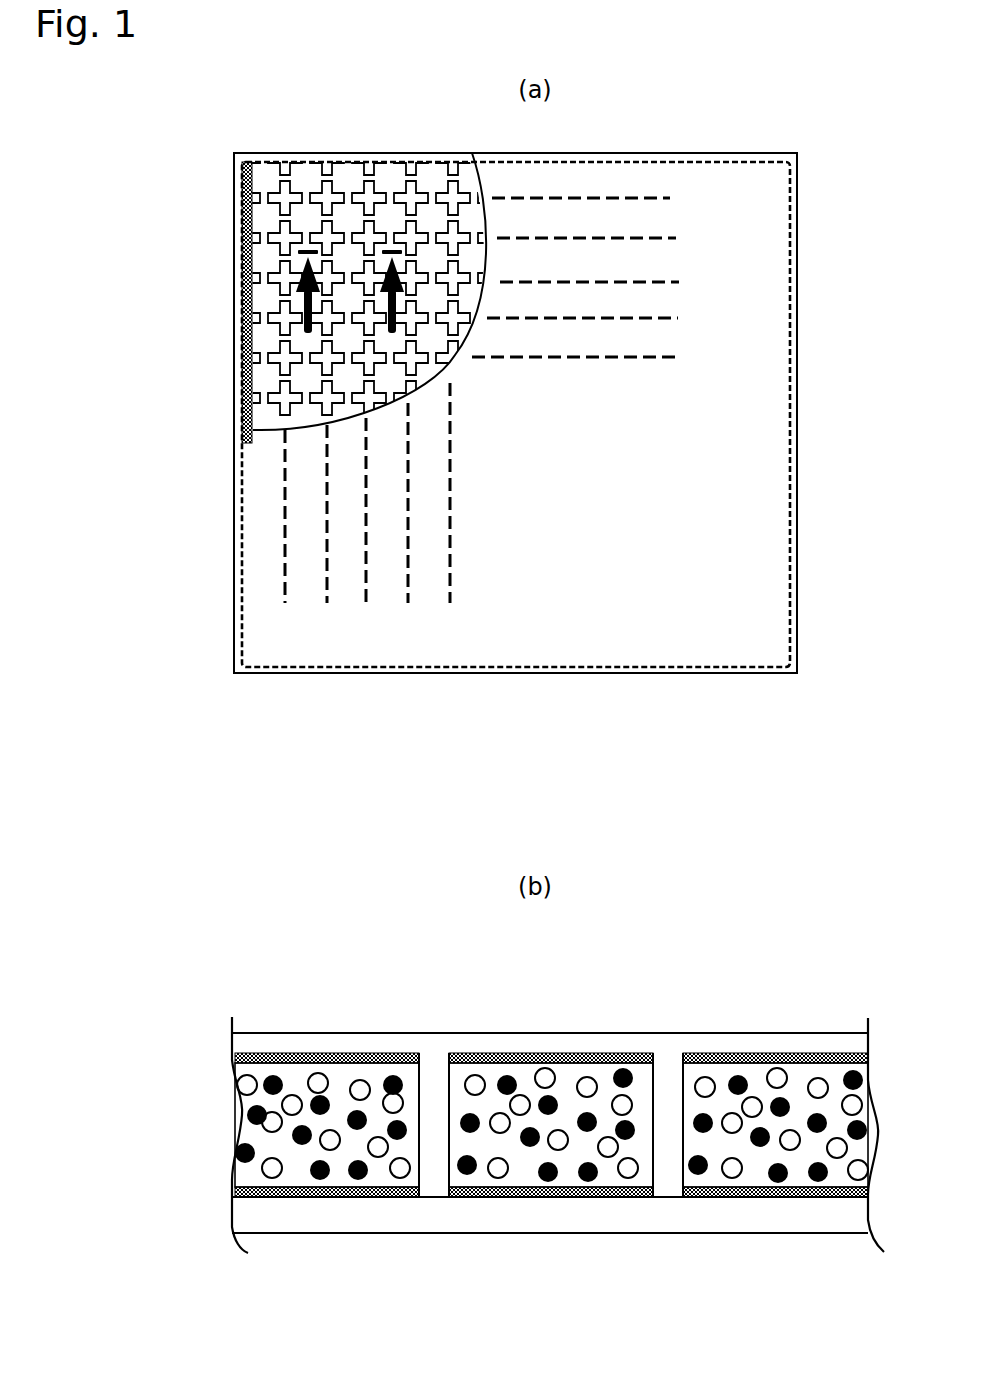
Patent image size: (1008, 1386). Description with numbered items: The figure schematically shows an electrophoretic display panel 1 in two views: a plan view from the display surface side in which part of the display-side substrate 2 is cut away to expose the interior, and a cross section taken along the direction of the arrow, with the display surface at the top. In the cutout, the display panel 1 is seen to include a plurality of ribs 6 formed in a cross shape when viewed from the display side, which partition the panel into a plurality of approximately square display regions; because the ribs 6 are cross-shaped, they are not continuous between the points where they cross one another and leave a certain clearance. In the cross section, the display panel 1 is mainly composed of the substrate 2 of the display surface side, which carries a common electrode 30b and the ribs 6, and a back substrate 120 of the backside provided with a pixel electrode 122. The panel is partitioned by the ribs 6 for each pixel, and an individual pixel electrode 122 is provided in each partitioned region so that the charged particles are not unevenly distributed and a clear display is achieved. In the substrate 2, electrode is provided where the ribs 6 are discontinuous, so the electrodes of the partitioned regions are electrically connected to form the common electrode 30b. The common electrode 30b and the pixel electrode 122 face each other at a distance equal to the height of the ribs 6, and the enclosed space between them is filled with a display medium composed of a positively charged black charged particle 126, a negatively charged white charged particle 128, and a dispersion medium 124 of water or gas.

The display panel 1 is at (757, 675).
The substrate 2 is at (265, 485).
The ribs 6 is at (247, 248).
The common electrode 30b is at (565, 1053).
The back substrate 120 is at (730, 1218).
The pixel electrode 122 is at (607, 1198).
The dispersion medium 124 is at (293, 1080).
The black charged particle 126 is at (405, 1080).
The white charged particle 128 is at (313, 1078).